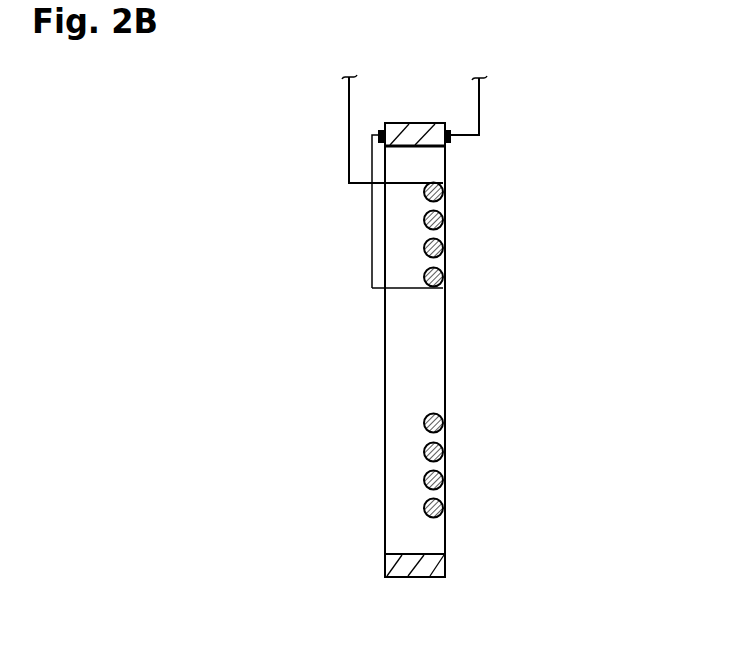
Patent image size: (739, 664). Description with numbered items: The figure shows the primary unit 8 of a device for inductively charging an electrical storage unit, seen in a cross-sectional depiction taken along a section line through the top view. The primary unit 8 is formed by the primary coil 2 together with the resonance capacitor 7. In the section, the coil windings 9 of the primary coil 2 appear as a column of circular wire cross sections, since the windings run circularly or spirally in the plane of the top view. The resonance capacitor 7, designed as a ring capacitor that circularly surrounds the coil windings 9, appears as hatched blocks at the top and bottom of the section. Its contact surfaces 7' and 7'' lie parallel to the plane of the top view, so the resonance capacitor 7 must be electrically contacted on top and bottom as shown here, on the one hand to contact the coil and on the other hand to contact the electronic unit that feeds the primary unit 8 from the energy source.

The primary coil 2 is at (460, 186).
The resonance capacitor 7 is at (414, 99).
The contact surface 7' is at (463, 569).
The contact surface 7'' is at (346, 569).
The primary unit 8 is at (508, 100).
The coil windings 9 is at (444, 245).